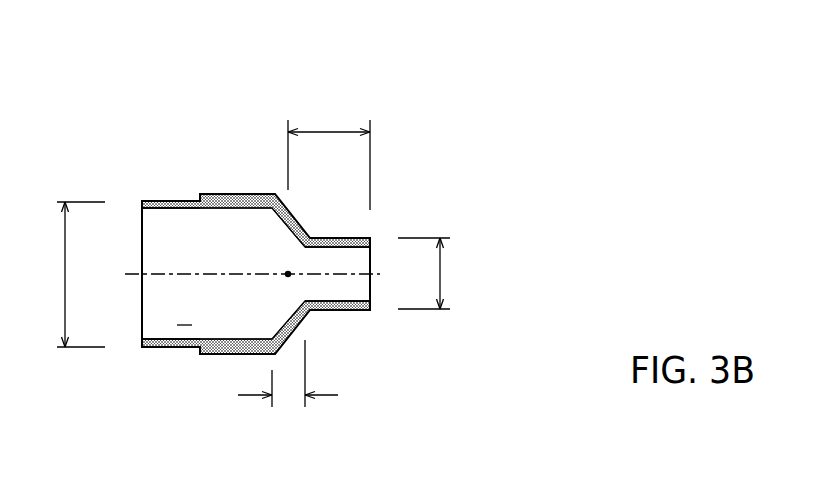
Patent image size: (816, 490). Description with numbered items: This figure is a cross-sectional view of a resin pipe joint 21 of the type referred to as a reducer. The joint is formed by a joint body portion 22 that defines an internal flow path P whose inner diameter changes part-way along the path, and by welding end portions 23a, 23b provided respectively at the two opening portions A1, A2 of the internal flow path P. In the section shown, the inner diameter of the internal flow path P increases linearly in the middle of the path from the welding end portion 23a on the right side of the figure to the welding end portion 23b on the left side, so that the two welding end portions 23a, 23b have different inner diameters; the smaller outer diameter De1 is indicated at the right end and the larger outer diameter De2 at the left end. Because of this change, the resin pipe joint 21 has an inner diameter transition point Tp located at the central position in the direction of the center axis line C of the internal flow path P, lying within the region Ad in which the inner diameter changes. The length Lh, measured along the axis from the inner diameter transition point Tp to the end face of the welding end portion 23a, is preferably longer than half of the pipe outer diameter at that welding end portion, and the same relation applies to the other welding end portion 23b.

The resin pipe joint 21 is at (458, 75).
The joint body portion 22 is at (338, 363).
The welding end portion 23a is at (372, 241).
The welding end portion 23b is at (141, 204).
The center axis line C is at (265, 277).
The inner diameter transition point Tp is at (286, 273).
The internal flow path P is at (184, 308).
The opening portion A1 is at (372, 311).
The opening portion A2 is at (141, 322).
The pipe outer diameter De2 is at (61, 274).
The pipe outer diameter De1 is at (445, 273).
The length Lh is at (329, 148).
The region Ad is at (288, 391).